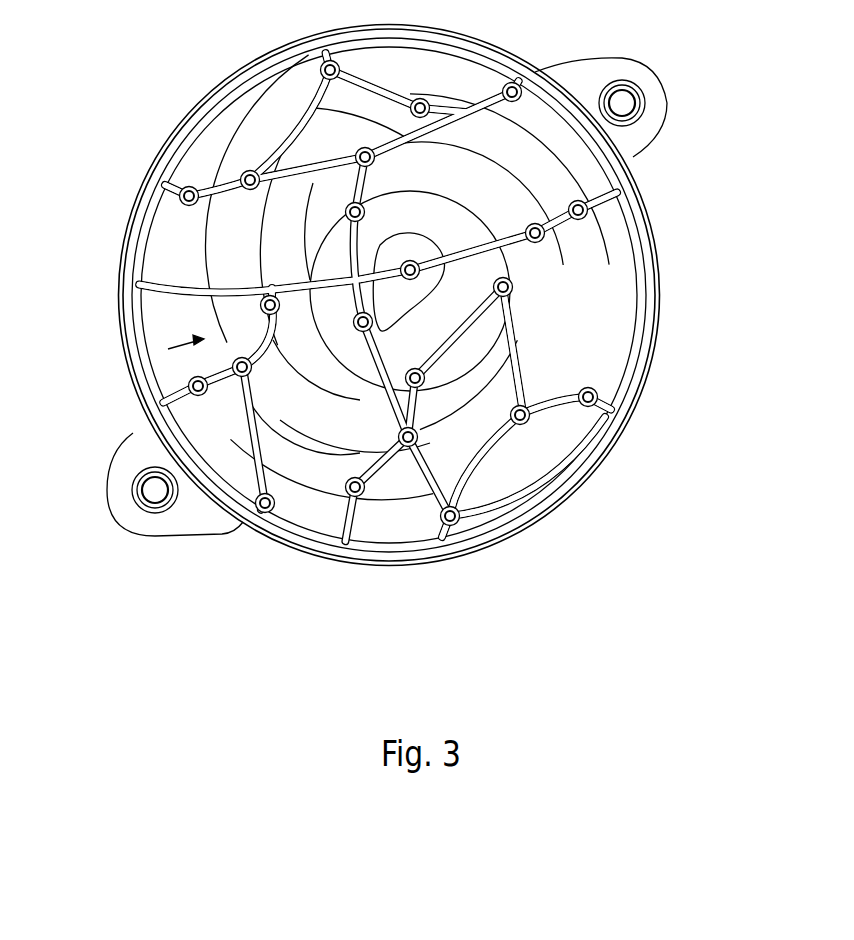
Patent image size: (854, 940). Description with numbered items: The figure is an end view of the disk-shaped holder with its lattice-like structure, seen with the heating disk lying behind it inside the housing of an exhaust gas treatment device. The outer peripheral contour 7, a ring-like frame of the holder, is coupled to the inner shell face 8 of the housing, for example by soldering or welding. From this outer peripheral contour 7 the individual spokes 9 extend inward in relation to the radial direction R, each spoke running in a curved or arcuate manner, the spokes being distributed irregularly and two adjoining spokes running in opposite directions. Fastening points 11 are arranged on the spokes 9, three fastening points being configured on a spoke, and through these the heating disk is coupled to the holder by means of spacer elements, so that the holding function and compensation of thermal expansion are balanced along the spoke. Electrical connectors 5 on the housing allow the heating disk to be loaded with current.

The electrical connectors 5 is at (637, 93).
The outer peripheral contour 7 is at (636, 354).
The inner shell face 8 is at (645, 308).
The spokes 9 is at (187, 273).
The fastening points 11 is at (414, 396).
The radial direction R is at (162, 345).